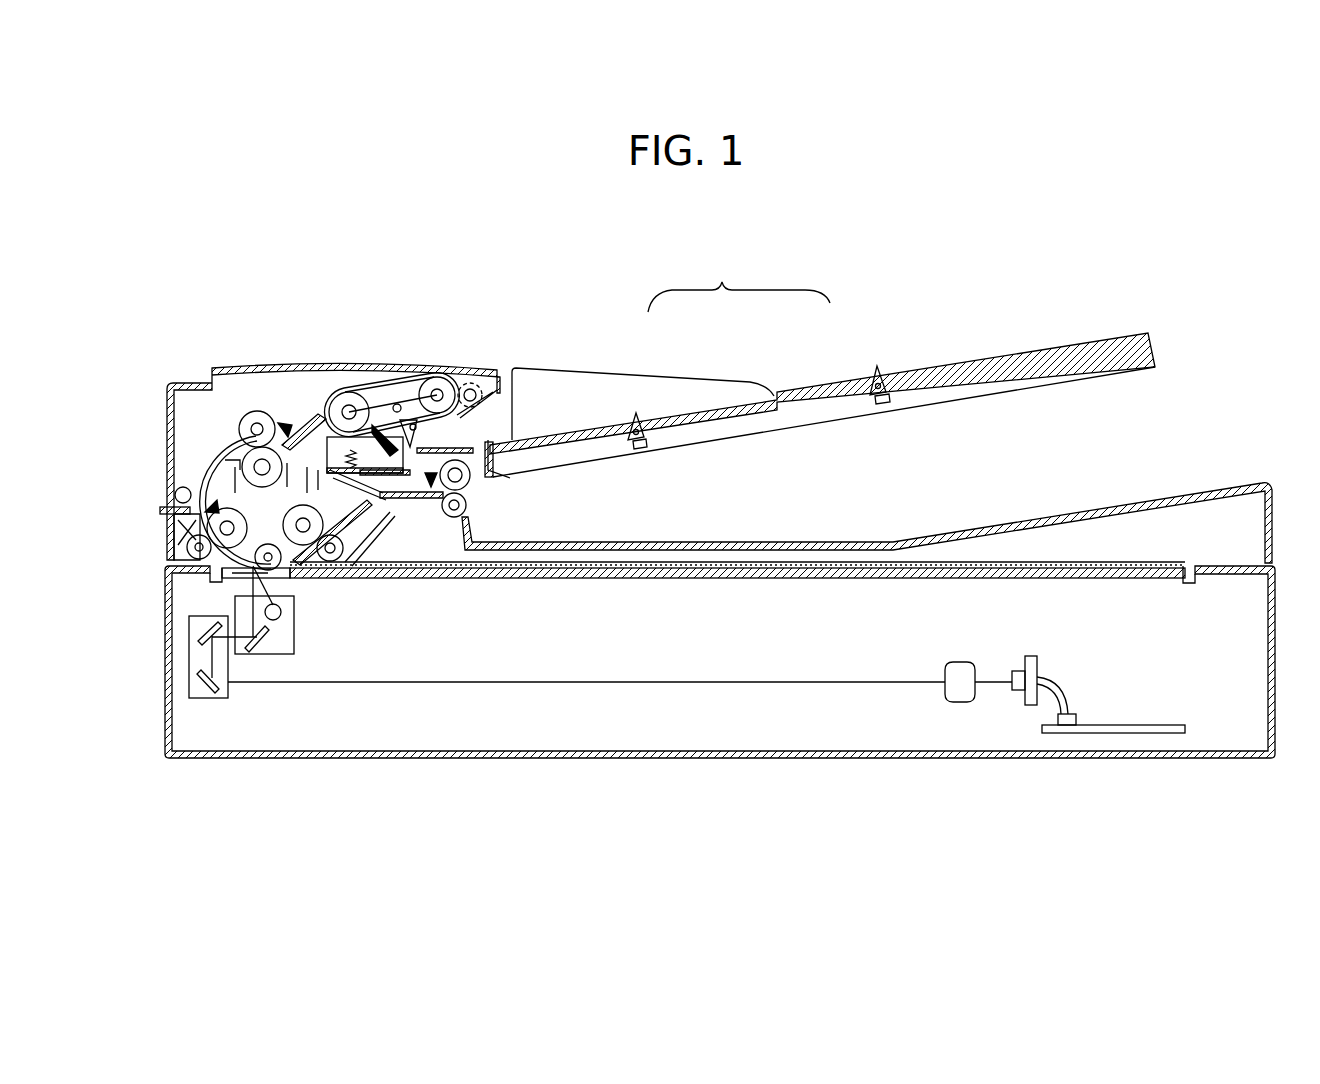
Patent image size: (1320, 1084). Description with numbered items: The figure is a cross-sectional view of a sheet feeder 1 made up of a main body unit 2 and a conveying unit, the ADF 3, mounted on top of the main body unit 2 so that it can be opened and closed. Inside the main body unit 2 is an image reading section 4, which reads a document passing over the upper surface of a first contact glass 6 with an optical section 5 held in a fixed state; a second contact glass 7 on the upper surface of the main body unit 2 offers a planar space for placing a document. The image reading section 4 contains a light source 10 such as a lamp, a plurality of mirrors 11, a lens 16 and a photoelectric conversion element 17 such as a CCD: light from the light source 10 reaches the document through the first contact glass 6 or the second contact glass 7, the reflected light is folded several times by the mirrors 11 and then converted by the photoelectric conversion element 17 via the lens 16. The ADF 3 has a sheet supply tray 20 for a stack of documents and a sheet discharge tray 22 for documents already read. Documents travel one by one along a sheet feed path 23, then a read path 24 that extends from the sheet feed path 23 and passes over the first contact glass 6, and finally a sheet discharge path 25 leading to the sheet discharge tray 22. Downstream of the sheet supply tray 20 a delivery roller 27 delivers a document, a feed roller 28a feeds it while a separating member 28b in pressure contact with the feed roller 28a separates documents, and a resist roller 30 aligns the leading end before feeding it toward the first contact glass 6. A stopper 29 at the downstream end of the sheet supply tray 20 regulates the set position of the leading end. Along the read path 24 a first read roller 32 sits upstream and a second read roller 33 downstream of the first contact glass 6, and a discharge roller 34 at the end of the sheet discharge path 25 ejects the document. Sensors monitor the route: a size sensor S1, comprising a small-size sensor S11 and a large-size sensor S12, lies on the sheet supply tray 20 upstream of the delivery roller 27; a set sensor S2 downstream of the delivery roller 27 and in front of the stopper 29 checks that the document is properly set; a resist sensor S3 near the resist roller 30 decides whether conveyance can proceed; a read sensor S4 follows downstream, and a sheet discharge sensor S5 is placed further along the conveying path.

The sheet feeder 1 is at (689, 541).
The main body unit 2 is at (720, 720).
The conveying unit (ADF) 3 is at (704, 461).
The image reading section 4 is at (547, 687).
The optical section 5 is at (297, 645).
The first contact glass 6 is at (232, 574).
The second contact glass 7 is at (528, 580).
The light source 10 is at (285, 614).
The mirrors 11 is at (230, 695).
The lens 16 is at (960, 667).
The photoelectric conversion element 17 is at (1128, 725).
The sheet supply tray 20 is at (959, 347).
The sheet discharge tray 22 is at (824, 540).
The sheet feed path 23 is at (220, 458).
The read path 24 is at (249, 503).
The sheet discharge path 25 is at (368, 512).
The delivery roller 27 is at (437, 377).
The feed roller 28a is at (349, 392).
The separating member 28b is at (322, 400).
The stopper 29 is at (383, 392).
The resist roller 30 is at (250, 410).
The first read roller 32 is at (188, 551).
The second read roller 33 is at (343, 543).
The discharge roller 34 is at (472, 502).
The first detection sensor (size sensor) S1 is at (739, 283).
The small-size sensor S11 is at (640, 412).
The large-size sensor S12 is at (874, 368).
The second detection sensor (set sensor) S2 is at (462, 398).
The third detection sensor (resist sensor) S3 is at (285, 422).
The fourth detection sensor (read sensor) S4 is at (207, 492).
The fifth detection sensor (sheet discharge sensor) S5 is at (431, 472).